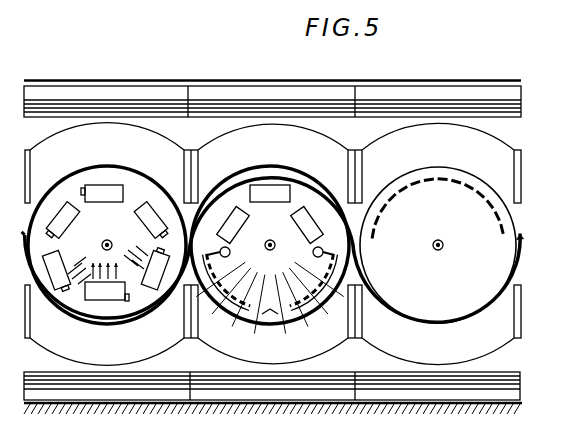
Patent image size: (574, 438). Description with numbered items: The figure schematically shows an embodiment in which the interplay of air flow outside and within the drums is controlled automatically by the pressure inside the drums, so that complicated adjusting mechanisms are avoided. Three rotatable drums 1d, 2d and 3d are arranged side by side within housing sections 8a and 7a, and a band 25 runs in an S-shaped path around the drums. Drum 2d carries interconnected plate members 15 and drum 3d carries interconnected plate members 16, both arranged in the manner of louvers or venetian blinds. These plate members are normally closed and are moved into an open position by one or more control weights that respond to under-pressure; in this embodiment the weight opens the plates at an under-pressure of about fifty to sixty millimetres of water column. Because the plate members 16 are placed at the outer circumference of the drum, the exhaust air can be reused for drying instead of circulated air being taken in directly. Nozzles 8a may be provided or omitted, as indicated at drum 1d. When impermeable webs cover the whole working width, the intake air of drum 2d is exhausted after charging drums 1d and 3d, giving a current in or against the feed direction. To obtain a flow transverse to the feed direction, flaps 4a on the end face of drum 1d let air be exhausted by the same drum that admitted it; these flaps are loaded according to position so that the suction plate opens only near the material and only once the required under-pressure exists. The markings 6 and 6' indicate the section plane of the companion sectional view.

The rotatable drum 1d is at (113, 234).
The rotatable drum 2d is at (278, 234).
The rotatable drum 3d is at (447, 234).
The flaps 4a is at (73, 213).
The housing section 7a is at (438, 243).
The nozzles 8a is at (189, 244).
The interconnected plate members 15 is at (250, 278).
The interconnected plate members 16 is at (402, 193).
The belt 25 is at (523, 236).
The section line 6 is at (75, 237).
The section line 6' is at (473, 238).